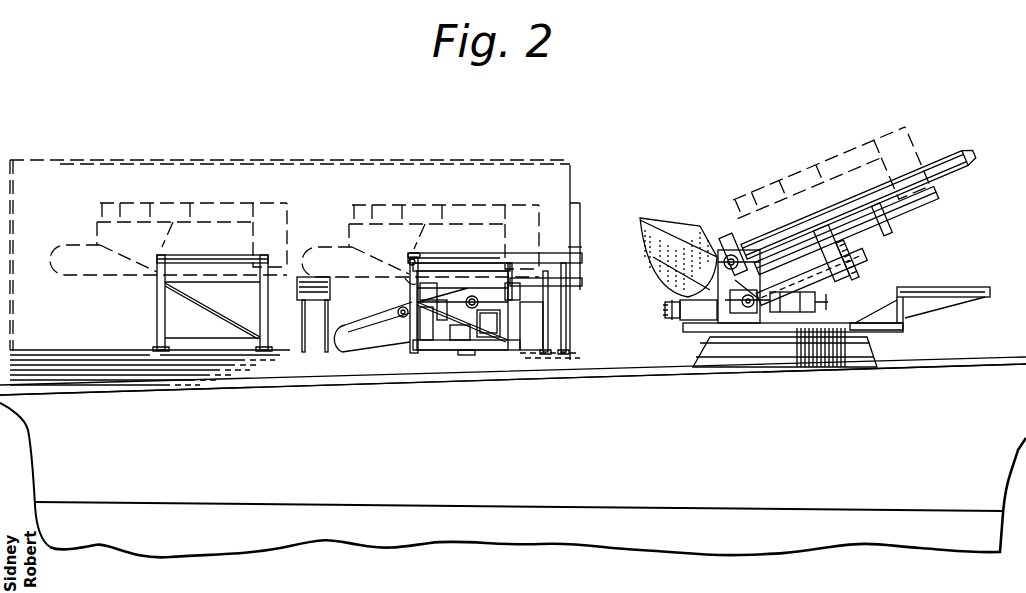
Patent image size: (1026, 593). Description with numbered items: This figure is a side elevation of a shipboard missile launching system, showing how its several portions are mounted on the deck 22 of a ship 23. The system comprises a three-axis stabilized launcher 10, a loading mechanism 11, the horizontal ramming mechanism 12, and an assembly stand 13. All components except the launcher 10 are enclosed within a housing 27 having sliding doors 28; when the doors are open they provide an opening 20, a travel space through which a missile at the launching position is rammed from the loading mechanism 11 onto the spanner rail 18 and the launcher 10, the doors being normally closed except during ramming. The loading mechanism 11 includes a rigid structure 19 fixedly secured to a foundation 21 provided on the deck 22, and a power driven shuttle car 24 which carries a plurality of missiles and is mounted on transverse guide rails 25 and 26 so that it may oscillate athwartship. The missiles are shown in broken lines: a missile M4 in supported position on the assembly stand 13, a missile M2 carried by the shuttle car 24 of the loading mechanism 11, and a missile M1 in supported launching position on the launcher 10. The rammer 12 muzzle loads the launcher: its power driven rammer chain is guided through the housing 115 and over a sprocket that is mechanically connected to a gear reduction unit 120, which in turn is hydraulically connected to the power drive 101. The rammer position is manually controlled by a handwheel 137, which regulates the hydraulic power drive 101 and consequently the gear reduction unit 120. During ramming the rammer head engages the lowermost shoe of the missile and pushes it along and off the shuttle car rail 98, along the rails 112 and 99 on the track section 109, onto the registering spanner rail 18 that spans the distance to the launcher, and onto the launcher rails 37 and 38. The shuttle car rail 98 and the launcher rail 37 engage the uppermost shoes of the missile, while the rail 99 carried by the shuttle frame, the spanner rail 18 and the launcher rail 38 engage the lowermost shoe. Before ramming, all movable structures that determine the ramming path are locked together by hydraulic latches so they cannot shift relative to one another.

The three-axis stabilized launcher 10 is at (823, 235).
The loading mechanism 11 is at (531, 309).
The ramming mechanism 12 is at (373, 316).
The assembly stand 13 is at (156, 301).
The spanner rail 18 is at (940, 288).
The rigid structure 19 is at (412, 333).
The opening 20 is at (567, 213).
The foundation 21 is at (297, 369).
The deck 22 is at (621, 373).
The ship 23 is at (527, 440).
The shuttle car 24 is at (408, 262).
The transverse guide rail 25 is at (406, 281).
The transverse guide rail 26 is at (515, 296).
The housing 27 is at (272, 160).
The sliding doors 28 is at (583, 203).
The launcher rail 37 is at (962, 150).
The launcher rail 38 is at (868, 230).
The shuttle car rail 98 is at (438, 253).
The rail 99 is at (582, 285).
The power drive 101 is at (463, 350).
The track section 109 is at (576, 251).
The rail 112 is at (581, 258).
The housing 115 is at (355, 296).
The gear reduction unit 120 is at (487, 292).
The handwheel 137 is at (400, 307).
The module M1 is at (888, 185).
The missile M2 is at (343, 270).
The module M4 is at (93, 270).